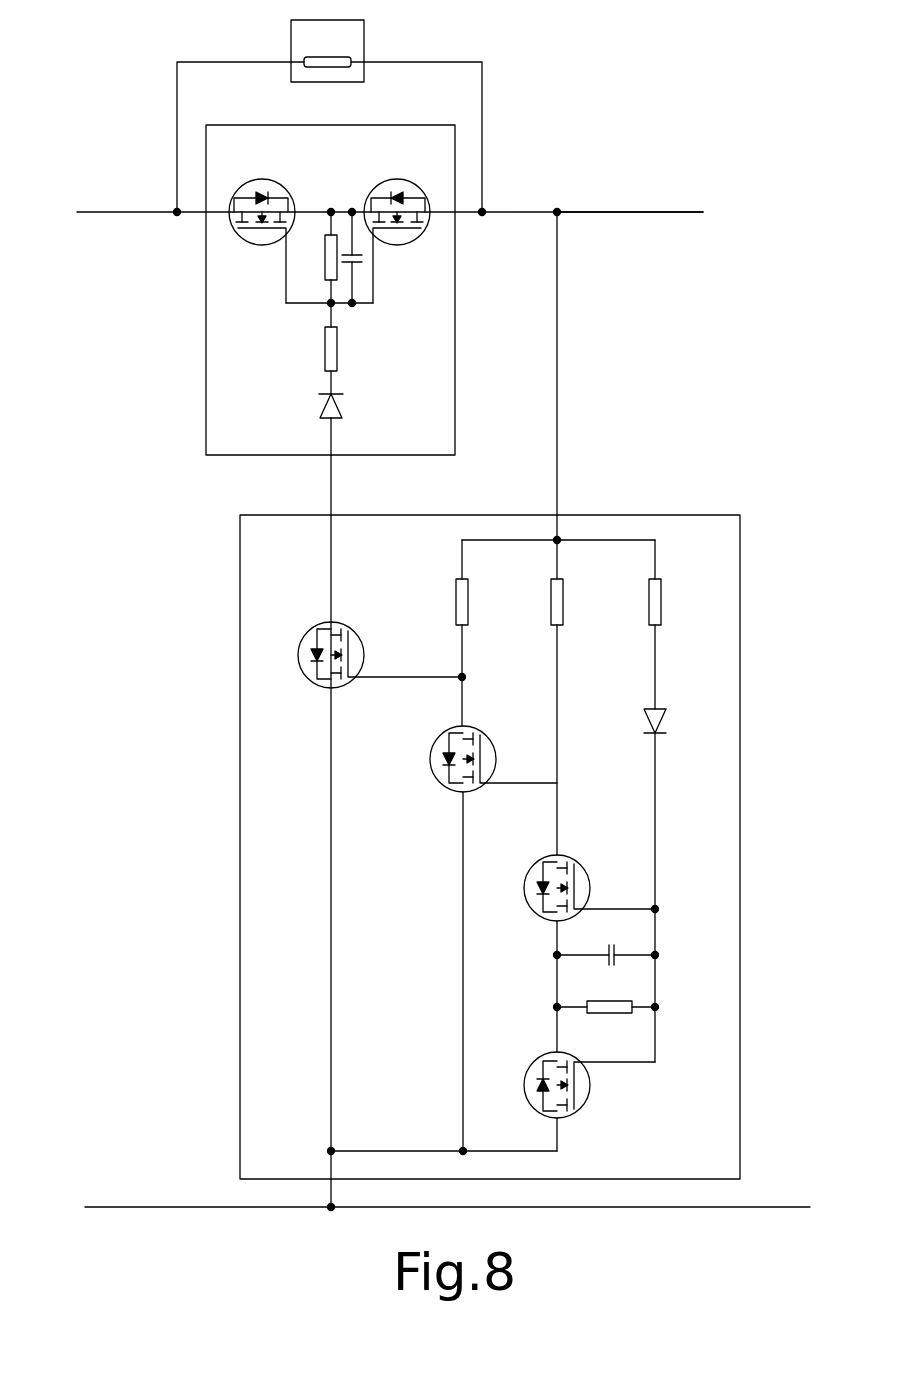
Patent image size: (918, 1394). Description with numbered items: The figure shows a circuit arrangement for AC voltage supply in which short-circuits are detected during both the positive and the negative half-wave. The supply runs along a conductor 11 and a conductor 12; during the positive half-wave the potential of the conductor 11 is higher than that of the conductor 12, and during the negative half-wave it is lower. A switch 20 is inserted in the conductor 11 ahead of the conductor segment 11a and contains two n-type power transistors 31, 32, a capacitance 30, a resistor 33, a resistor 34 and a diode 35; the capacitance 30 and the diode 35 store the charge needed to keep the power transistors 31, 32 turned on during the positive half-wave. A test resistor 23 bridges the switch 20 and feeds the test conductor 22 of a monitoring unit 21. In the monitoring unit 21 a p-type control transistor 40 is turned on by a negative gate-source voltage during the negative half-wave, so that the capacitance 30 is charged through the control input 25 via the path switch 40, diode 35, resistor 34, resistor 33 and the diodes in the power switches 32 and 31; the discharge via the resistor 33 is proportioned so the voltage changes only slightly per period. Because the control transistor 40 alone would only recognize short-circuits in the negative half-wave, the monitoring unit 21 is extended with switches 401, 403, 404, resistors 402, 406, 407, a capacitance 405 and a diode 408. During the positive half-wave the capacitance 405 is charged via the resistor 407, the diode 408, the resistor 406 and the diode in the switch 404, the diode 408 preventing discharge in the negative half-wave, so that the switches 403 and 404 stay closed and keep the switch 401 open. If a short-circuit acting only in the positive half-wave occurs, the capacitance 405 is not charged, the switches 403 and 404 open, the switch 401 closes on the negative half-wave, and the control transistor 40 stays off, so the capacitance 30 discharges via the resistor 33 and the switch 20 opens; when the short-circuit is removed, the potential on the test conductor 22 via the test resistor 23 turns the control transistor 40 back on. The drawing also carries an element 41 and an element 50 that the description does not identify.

The conductor 11 is at (137, 210).
The conductor segment 11a is at (632, 211).
The conductor 12 is at (190, 1205).
The switch 20 is at (205, 290).
The monitoring unit 21 is at (240, 948).
The test conductor 22 is at (557, 298).
The test resistor 23 is at (365, 46).
The control input 25 is at (333, 458).
The capacitance 30 is at (368, 257).
The power transistor 31 is at (262, 246).
The power transistor 32 is at (393, 182).
The resistor 33 is at (326, 263).
The resistor 34 is at (337, 345).
The diode 35 is at (342, 413).
The control transistor 40 is at (305, 672).
The resistor 41 is at (468, 590).
The fuse 50 is at (315, 67).
The switch 401 is at (428, 767).
The resistor 402 is at (563, 590).
The switch 403 is at (530, 902).
The switch 404 is at (596, 1086).
The capacitance 405 is at (617, 942).
The resistor 406 is at (612, 1010).
The resistor 407 is at (661, 590).
The diode 408 is at (666, 725).